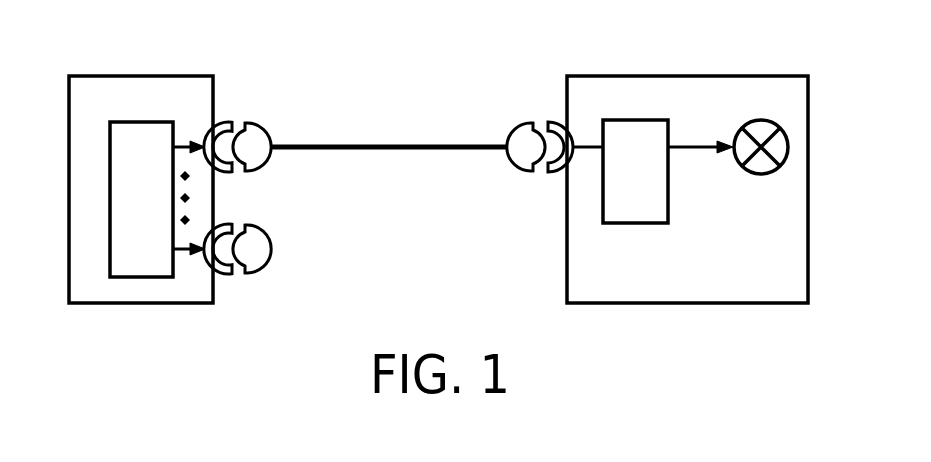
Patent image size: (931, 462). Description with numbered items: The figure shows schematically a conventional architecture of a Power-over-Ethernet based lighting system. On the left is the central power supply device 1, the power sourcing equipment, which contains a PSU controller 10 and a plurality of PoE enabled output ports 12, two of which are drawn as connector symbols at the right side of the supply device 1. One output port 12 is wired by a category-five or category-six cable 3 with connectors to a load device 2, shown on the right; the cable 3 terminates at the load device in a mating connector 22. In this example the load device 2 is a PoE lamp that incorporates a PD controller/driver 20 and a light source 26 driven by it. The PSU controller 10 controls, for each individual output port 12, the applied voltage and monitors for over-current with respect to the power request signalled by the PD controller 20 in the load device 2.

The central power supply device 1 is at (178, 76).
The PSU controller 10 is at (122, 122).
The PoE enabled output ports 12 is at (217, 119).
The Cat5/6 cables 3 is at (406, 143).
The connector of second device 22 is at (562, 118).
The load device 2 is at (702, 76).
The PD controller/driver 20 is at (638, 120).
The light source 26 is at (762, 120).